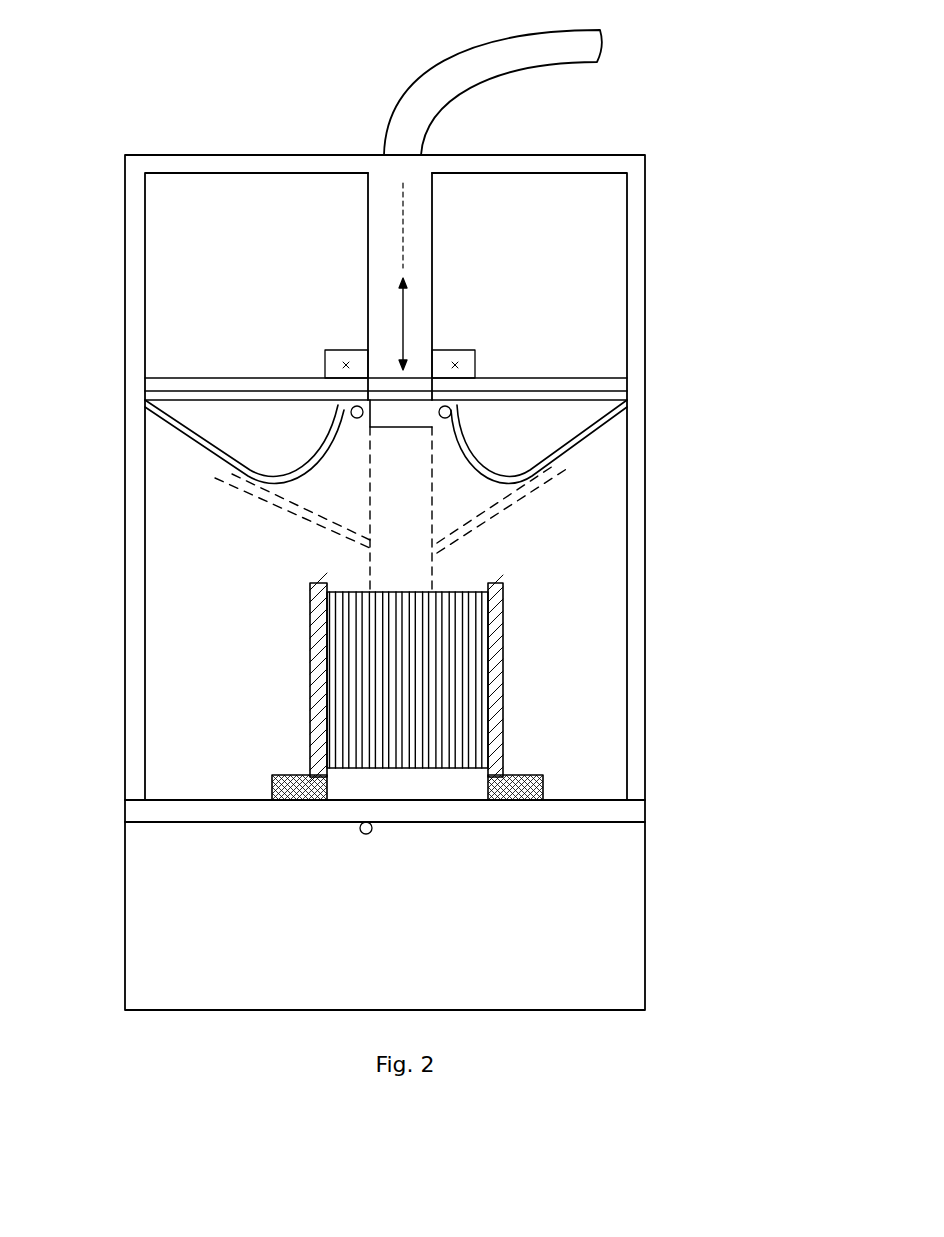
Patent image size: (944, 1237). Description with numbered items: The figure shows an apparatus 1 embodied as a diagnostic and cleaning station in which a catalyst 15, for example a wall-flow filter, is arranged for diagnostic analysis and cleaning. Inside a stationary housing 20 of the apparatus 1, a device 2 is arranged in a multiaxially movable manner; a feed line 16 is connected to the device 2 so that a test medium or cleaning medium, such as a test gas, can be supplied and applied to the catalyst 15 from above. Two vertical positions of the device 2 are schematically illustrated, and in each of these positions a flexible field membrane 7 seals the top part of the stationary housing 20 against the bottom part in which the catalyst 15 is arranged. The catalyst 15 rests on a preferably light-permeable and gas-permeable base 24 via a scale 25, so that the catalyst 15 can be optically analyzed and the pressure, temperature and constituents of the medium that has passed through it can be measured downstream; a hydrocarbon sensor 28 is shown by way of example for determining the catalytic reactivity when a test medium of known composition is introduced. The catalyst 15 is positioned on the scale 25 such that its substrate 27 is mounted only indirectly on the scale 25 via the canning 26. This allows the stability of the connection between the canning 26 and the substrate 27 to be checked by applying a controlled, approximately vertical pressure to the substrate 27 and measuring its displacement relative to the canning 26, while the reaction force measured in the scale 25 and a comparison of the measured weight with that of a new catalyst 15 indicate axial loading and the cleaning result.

The apparatus 1 is at (132, 140).
The device 2 is at (403, 418).
The flexible field membrane 7 is at (568, 460).
The catalyst 15 is at (364, 708).
The feed line 16 is at (472, 76).
The stationary housing 20 is at (635, 363).
The base 24 is at (463, 810).
The scale 25 is at (285, 790).
The canning 26 is at (310, 668).
The substrate 27 is at (445, 592).
The hydrocarbon sensor 28 is at (366, 835).